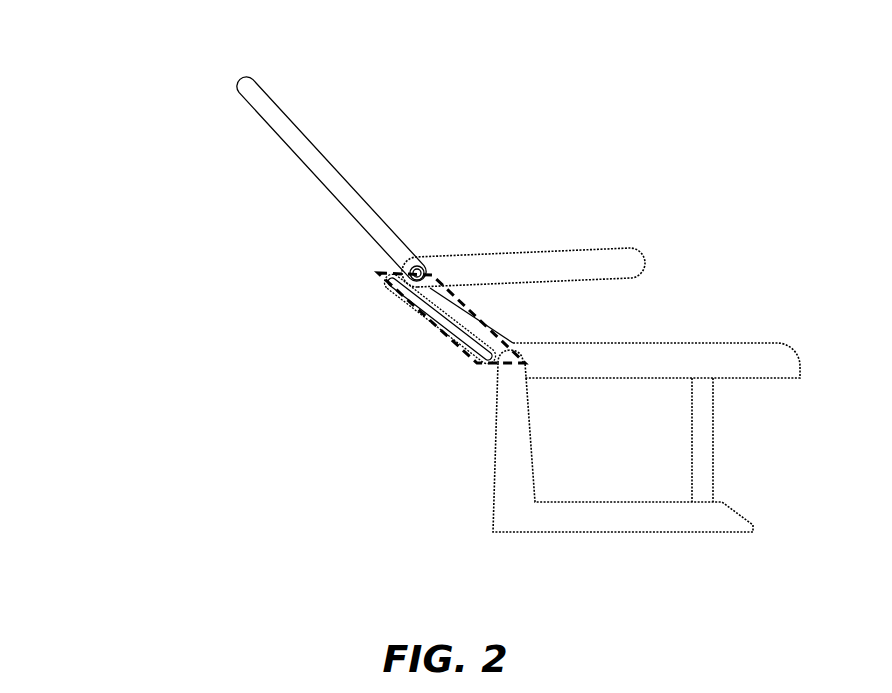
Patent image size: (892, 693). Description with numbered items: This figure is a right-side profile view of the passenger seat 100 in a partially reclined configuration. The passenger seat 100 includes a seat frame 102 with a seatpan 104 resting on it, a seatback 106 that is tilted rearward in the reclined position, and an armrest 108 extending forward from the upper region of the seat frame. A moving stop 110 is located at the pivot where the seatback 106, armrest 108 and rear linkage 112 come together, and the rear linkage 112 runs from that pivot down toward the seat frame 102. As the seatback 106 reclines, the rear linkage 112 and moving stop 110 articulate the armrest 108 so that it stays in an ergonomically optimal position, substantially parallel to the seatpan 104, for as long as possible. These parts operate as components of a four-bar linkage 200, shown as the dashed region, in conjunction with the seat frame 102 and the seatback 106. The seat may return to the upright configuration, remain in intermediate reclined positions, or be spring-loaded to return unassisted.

The passenger seat 100 is at (129, 81).
The seat frame 102 is at (515, 480).
The seatpan 104 is at (695, 363).
The seatback 106 is at (318, 155).
The armrest 108 is at (592, 255).
The moving stop 110 is at (398, 272).
The rear linkage 112 is at (415, 303).
The four-bar linkage 200 is at (428, 322).